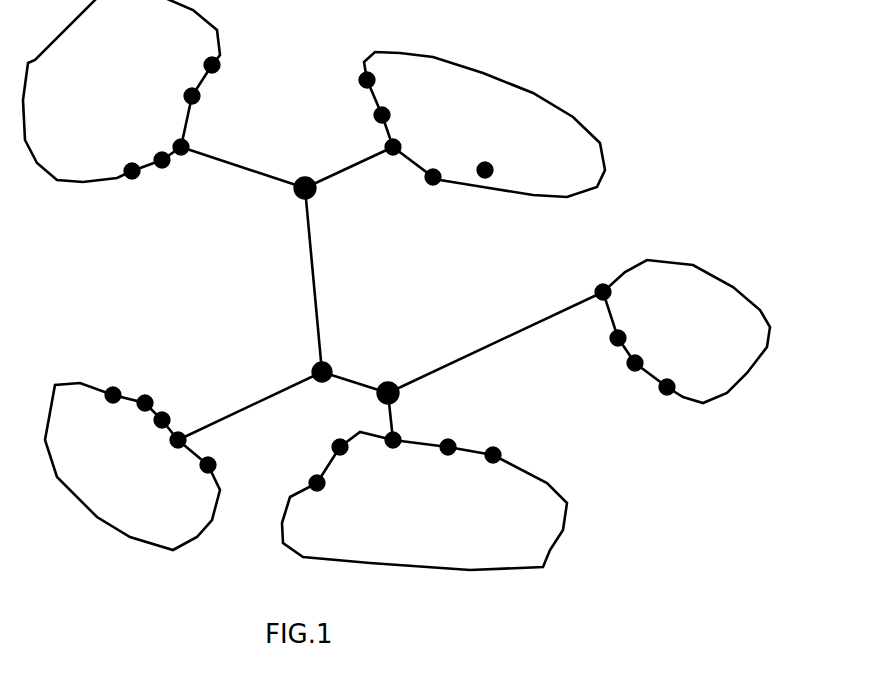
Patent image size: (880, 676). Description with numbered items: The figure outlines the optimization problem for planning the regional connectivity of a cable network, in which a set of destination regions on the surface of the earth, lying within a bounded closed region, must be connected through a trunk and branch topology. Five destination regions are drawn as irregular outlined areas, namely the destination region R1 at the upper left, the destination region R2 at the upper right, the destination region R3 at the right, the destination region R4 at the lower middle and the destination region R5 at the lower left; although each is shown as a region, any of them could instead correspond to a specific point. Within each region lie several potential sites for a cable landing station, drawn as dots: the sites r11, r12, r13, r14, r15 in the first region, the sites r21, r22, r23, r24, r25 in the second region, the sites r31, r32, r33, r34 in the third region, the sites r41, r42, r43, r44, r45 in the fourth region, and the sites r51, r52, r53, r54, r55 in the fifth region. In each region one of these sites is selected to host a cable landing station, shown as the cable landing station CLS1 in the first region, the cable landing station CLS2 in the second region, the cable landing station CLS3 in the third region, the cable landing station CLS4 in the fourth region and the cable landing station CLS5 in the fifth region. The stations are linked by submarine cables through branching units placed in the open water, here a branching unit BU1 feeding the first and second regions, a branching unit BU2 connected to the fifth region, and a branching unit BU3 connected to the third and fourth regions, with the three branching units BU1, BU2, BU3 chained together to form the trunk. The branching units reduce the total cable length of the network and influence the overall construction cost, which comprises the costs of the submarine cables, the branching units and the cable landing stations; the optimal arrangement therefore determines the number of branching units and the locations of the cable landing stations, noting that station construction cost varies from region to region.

The destination region R1 is at (121, 91).
The destination region R2 is at (484, 124).
The destination region R3 is at (686, 331).
The destination region R4 is at (424, 501).
The destination region R5 is at (132, 466).
The cable landing station CLS1 is at (146, 122).
The cable landing station CLS2 is at (445, 143).
The cable landing station CLS3 is at (650, 300).
The cable landing station CLS4 is at (400, 497).
The cable landing station CLS5 is at (166, 475).
The branching unit BU1 is at (310, 177).
The branching unit BU2 is at (300, 358).
The branching unit BU3 is at (394, 377).
The potential site r11 is at (232, 65).
The potential site r12 is at (211, 100).
The potential site r13 is at (202, 141).
The potential site r14 is at (170, 177).
The potential site r15 is at (117, 191).
The potential site r21 is at (343, 70).
The potential site r22 is at (356, 110).
The potential site r23 is at (380, 162).
The potential site r24 is at (431, 189).
The potential site r25 is at (504, 171).
The potential site r31 is at (594, 274).
The potential site r32 is at (598, 343).
The potential site r33 is at (620, 376).
The potential site r34 is at (658, 400).
The potential site r41 is at (510, 444).
The potential site r42 is at (441, 460).
The potential site r43 is at (388, 453).
The potential site r44 is at (344, 460).
The potential site r45 is at (314, 495).
The potential site r51 is at (227, 461).
The potential site r52 is at (169, 449).
The potential site r53 is at (179, 411).
The potential site r54 is at (144, 388).
The potential site r55 is at (95, 376).